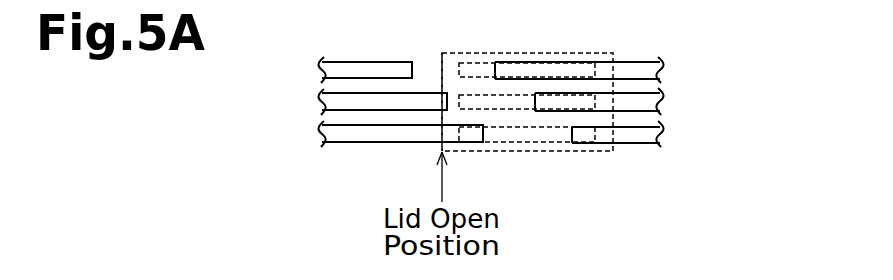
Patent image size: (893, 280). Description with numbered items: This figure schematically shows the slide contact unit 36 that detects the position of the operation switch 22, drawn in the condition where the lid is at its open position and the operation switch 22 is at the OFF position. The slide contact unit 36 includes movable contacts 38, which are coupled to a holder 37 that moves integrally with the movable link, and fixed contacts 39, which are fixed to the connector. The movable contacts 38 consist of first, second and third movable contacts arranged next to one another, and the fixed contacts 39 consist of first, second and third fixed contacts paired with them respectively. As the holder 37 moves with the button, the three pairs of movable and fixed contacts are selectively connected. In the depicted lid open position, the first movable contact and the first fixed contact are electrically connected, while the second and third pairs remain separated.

The operation switch 22 is at (342, 47).
The slide contact unit 36 is at (597, 38).
The holder 37 is at (450, 52).
The movable contacts 38 is at (482, 62).
The fixed contacts 39 is at (637, 61).